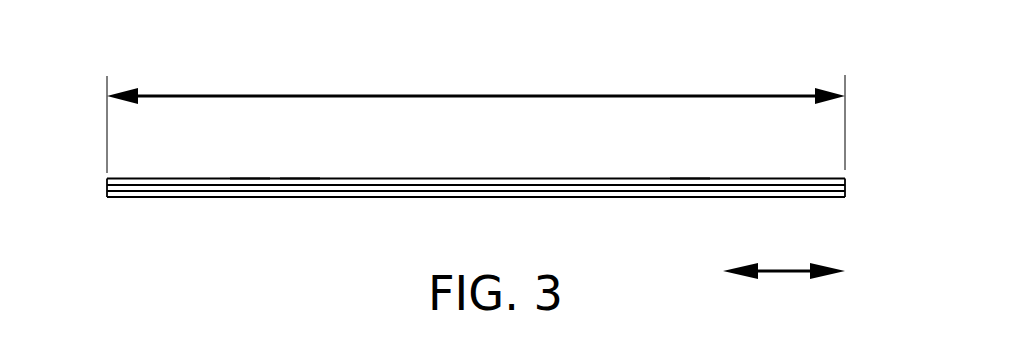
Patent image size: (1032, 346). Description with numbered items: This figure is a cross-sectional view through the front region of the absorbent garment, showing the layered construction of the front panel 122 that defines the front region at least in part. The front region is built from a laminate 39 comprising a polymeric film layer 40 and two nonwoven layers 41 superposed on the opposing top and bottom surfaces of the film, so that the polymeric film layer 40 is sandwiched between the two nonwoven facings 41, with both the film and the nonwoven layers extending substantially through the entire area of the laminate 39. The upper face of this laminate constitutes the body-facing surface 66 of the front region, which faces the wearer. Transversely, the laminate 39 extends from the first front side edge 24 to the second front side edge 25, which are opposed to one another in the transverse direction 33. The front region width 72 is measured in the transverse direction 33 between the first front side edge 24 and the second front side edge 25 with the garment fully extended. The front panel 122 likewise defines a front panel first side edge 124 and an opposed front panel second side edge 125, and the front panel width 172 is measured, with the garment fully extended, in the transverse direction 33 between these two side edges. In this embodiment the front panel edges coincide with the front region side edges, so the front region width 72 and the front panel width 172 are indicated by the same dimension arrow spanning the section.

The front region width 72 is at (552, 95).
The front panel width 172 is at (476, 113).
The polymeric film layer 40 is at (652, 189).
The nonwoven layer 41 is at (748, 177).
The first front side edge 24 is at (107, 187).
The front panel first side edge 124 is at (62, 173).
The second front side edge 25 is at (845, 178).
The front panel second side edge 125 is at (892, 172).
The laminate 39 is at (242, 138).
The body-facing surface 66 is at (302, 154).
The front panel 122 is at (690, 178).
The transverse direction 33 is at (780, 273).